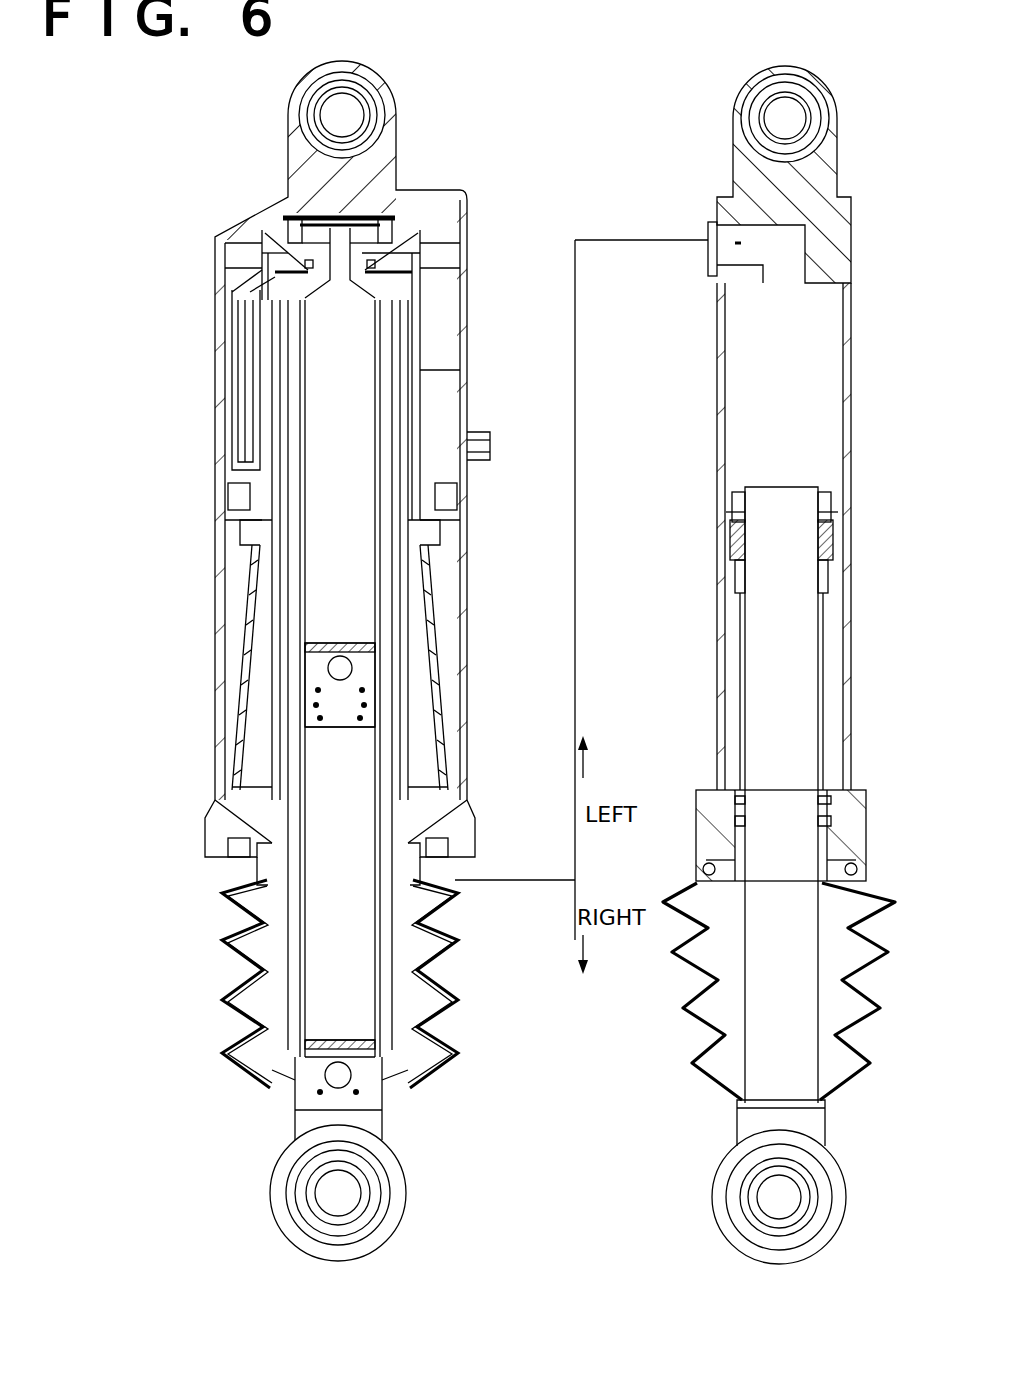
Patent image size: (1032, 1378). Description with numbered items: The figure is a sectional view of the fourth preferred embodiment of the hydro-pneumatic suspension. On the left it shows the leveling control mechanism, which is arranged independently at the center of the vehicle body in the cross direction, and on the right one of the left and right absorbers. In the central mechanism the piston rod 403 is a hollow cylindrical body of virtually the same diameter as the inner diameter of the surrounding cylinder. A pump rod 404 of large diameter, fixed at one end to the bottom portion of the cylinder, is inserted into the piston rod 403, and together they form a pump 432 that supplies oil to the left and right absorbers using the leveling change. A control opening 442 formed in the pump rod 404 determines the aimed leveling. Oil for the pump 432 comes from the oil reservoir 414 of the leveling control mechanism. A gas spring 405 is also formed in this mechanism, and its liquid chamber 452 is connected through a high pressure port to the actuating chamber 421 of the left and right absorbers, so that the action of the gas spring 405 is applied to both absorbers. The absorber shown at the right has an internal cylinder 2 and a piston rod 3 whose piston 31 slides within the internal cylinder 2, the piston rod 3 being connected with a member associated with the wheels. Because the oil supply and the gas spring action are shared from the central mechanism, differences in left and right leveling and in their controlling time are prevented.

The oil reservoir 414 is at (216, 408).
The pump rod 404 is at (377, 360).
The control opening 442 is at (303, 503).
The liquid chamber 452 is at (437, 570).
The gas spring 405 is at (438, 590).
The pump 432 is at (352, 758).
The piston rod 403 is at (440, 810).
The actuating chamber 421 is at (748, 362).
The internal cylinder 2 is at (678, 414).
The piston 31 is at (732, 540).
The piston rod 3 is at (736, 952).